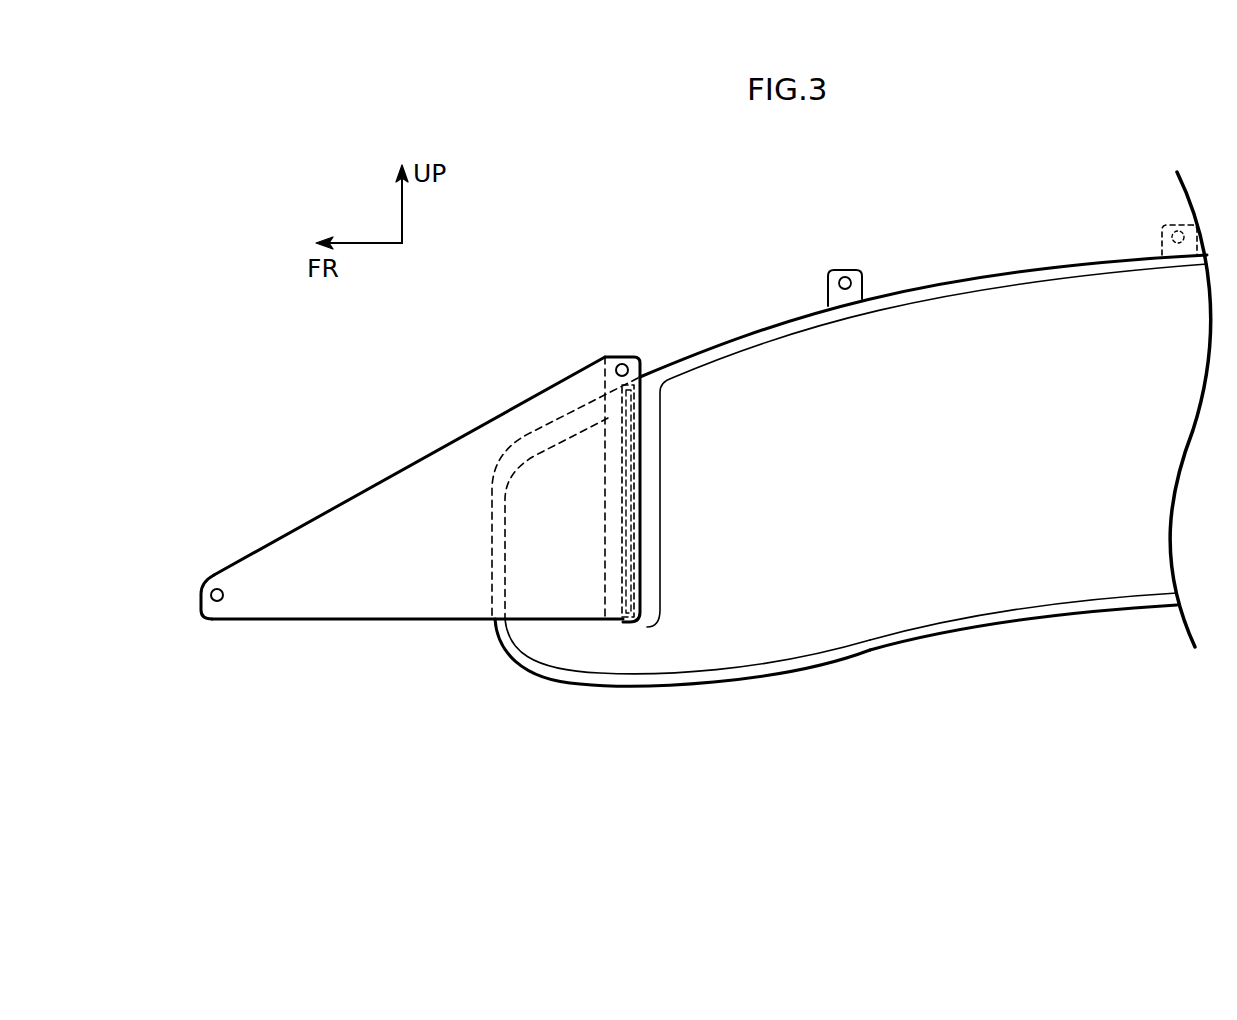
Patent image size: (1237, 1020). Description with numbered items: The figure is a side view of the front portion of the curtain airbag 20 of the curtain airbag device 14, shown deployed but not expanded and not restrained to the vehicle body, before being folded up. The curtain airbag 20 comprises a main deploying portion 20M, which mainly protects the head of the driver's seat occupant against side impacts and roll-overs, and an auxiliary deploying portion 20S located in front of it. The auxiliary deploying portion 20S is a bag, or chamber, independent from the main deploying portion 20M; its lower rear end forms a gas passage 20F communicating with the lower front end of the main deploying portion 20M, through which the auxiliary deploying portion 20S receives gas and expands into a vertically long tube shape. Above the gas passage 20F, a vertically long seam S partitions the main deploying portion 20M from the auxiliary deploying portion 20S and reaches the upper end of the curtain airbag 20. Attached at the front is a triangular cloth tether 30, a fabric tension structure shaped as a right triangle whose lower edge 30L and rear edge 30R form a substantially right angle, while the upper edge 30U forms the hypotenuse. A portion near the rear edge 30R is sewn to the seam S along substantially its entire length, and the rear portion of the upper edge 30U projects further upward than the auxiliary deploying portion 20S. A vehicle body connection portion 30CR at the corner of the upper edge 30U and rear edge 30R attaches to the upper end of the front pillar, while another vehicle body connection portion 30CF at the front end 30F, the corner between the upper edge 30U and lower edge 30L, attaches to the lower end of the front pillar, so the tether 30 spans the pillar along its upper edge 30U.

The curtain airbag device 14 is at (820, 456).
The curtain airbag 20 is at (930, 257).
The gas passage 20F is at (565, 647).
The main deploying portion 20M is at (977, 593).
The auxiliary deploying portion 20S is at (512, 643).
The triangular cloth tether 30 is at (476, 457).
The upper edge 30U is at (370, 488).
The lower edge 30L is at (343, 619).
The front end 30F is at (202, 612).
The vehicle body connection portion 30CF is at (217, 588).
The vehicle body connection portion 30CR is at (622, 362).
The rear edge 30R is at (640, 527).
The seam S is at (647, 458).